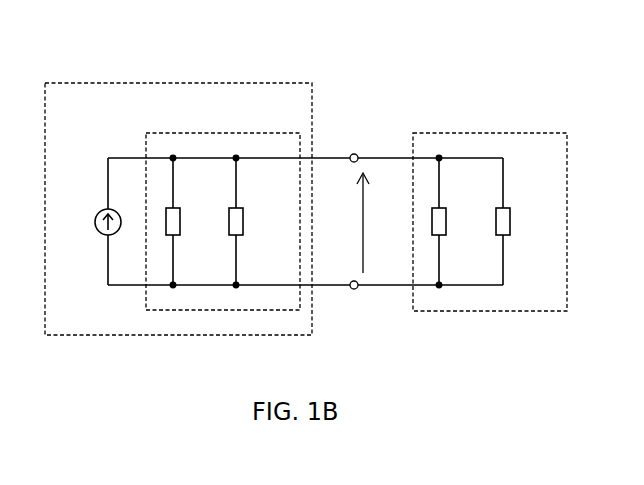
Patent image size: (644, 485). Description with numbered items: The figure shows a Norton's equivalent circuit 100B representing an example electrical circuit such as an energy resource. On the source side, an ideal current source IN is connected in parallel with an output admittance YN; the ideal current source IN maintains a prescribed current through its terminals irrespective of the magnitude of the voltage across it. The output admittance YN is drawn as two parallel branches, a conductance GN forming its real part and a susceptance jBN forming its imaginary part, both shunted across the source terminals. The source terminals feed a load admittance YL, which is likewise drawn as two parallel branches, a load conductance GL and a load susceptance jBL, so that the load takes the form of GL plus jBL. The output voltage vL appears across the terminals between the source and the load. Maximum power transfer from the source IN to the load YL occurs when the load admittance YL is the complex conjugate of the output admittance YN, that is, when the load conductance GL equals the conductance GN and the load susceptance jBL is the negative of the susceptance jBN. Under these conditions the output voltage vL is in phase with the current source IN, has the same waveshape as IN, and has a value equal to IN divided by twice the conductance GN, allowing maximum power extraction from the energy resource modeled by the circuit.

The Norton's equivalent circuit 100B is at (563, 87).
The output admittance YN is at (223, 205).
The load admittance YL is at (490, 206).
The ideal current source IN is at (95, 221).
The conductance GN is at (189, 221).
The susceptance jBN is at (255, 221).
The output voltage vL is at (376, 223).
The load conductance GL is at (454, 221).
The load susceptance jBL is at (521, 221).